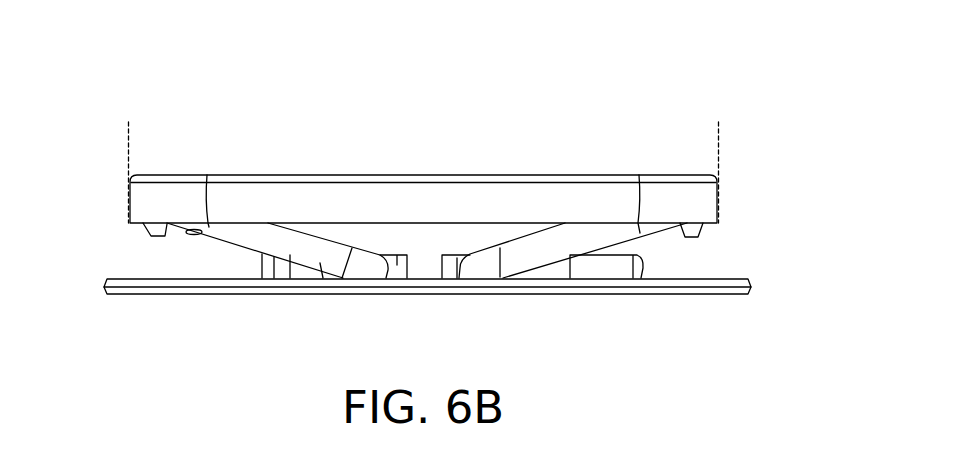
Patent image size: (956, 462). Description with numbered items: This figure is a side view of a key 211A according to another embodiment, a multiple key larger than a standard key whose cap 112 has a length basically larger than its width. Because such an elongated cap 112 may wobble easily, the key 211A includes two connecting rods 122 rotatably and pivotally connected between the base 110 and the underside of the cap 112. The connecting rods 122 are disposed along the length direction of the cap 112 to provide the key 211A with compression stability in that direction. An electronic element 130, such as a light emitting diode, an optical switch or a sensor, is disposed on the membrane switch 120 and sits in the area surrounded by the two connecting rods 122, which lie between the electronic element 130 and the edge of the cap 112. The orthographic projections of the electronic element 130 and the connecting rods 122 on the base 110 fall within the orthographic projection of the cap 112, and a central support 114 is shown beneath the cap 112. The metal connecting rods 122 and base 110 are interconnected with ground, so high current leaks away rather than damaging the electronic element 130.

The key 211A is at (113, 49).
The cap 112 is at (554, 173).
The support linkage 114 is at (367, 235).
The connecting rods 122 is at (233, 233).
The electronic element 130 is at (606, 265).
The membrane switch 120 is at (712, 278).
The base 110 is at (712, 296).